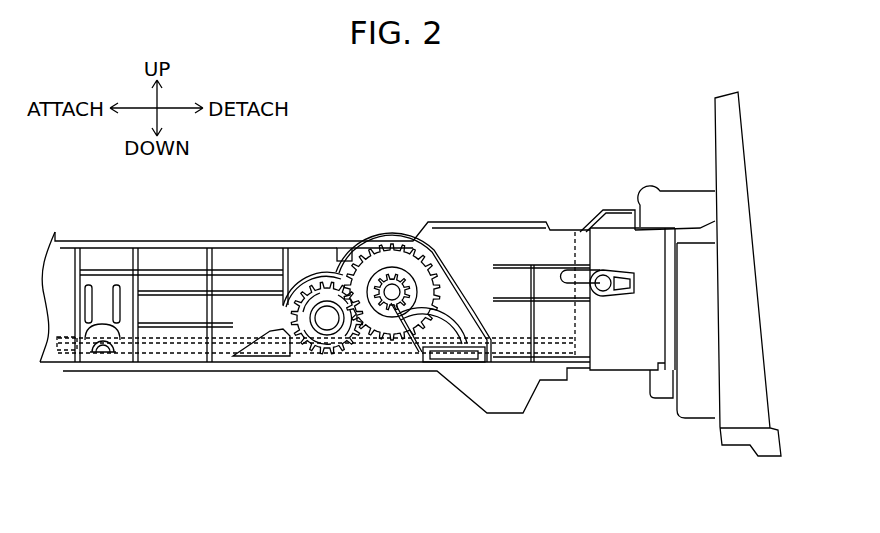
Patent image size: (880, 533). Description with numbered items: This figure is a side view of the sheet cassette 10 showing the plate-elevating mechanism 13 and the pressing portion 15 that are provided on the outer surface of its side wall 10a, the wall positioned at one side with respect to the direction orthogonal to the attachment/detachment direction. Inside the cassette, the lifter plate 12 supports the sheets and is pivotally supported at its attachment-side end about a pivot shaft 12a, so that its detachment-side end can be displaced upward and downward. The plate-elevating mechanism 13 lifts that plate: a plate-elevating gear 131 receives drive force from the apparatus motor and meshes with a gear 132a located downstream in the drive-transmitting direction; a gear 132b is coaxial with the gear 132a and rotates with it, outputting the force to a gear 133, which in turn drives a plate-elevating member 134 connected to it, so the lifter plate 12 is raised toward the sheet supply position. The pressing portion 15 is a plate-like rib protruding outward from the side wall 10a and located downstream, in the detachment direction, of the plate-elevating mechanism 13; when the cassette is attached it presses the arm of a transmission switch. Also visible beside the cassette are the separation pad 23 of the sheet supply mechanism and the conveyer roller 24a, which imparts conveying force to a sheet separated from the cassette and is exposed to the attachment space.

The sheet cassette 10 is at (399, 166).
The side wall 10a is at (238, 253).
The lifter plate 12 is at (560, 348).
The pivot shaft 12a is at (99, 353).
The plate-elevating mechanism 13 is at (391, 370).
The plate-elevating gear 131 is at (309, 354).
The gear 132a is at (360, 335).
The gear 132b is at (390, 312).
The gear 133 is at (433, 316).
The plate-elevating member 134 is at (466, 398).
The pressing portion 15 is at (568, 268).
The separation pad 23 is at (581, 230).
The conveyer roller 24a is at (643, 188).